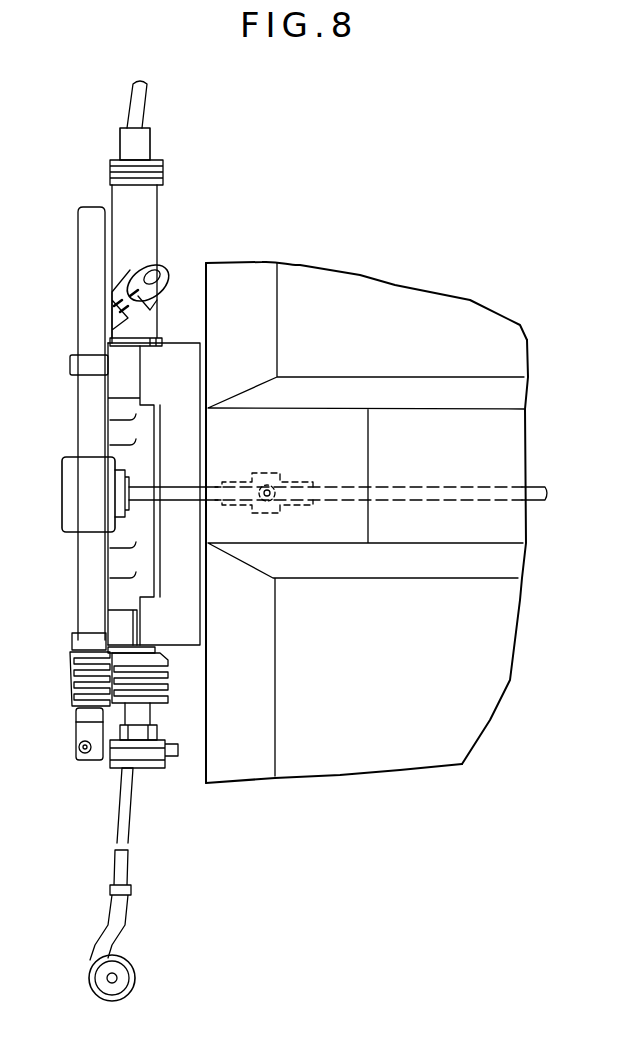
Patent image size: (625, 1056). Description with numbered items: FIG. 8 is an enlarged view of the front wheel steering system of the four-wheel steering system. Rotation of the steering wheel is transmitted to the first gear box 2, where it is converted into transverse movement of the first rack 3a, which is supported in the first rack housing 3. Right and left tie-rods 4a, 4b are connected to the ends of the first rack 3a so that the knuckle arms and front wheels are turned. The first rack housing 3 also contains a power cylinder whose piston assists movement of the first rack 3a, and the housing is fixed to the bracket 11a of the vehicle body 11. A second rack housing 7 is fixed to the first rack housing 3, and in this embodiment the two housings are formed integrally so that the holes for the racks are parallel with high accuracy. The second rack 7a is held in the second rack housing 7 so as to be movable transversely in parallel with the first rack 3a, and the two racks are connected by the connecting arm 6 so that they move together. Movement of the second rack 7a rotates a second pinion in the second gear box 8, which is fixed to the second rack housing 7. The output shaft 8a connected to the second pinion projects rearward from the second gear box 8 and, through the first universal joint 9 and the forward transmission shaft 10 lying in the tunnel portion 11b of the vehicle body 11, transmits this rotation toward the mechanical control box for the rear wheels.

The first gear box 2 is at (152, 265).
The first rack housing 3 is at (118, 193).
The first rack 3a is at (150, 732).
The right tie-rod 4a is at (135, 116).
The left tie-rod 4b is at (128, 864).
The connecting arm 6 is at (155, 748).
The second rack housing 7 is at (88, 392).
The second rack 7a is at (80, 718).
The second gear box 8 is at (70, 480).
The output shaft 8a is at (172, 495).
The first universal joint 9 is at (268, 466).
The forward transmission shaft 10 is at (455, 501).
The vehicle body 11 is at (385, 300).
The bracket 11a is at (165, 348).
The tunnel portion 11b is at (452, 455).